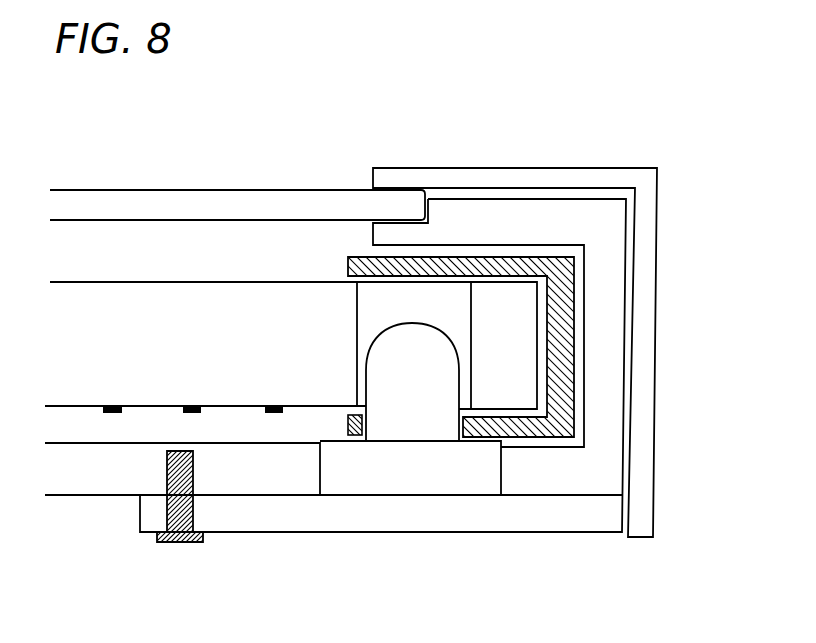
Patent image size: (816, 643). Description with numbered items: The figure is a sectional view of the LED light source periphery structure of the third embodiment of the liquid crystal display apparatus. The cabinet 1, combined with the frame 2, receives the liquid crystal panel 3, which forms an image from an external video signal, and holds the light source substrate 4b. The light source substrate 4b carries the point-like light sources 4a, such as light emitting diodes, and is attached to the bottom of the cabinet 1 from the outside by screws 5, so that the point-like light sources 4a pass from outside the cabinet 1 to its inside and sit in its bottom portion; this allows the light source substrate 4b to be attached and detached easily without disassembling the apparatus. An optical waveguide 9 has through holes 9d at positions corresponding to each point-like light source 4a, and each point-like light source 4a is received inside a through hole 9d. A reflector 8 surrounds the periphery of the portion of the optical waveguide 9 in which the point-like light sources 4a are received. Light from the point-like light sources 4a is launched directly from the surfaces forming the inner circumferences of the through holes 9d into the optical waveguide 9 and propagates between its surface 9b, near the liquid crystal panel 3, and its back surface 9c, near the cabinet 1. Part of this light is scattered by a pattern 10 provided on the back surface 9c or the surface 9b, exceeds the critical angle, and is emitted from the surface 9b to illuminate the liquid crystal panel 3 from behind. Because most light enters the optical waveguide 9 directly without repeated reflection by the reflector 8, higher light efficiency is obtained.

The cabinet 1 is at (611, 407).
The frame 2 is at (645, 233).
The liquid crystal panel 3 is at (210, 204).
The point-like light sources 4a is at (430, 345).
The light source substrate 4b is at (497, 518).
The screws 5 is at (194, 505).
The reflector 8 is at (508, 257).
The optical waveguide 9 is at (137, 305).
The surface of the optical waveguide 9b is at (263, 285).
The back surface of the optical waveguide 9c is at (142, 408).
The through holes 9d is at (399, 310).
The pattern 10 is at (113, 413).